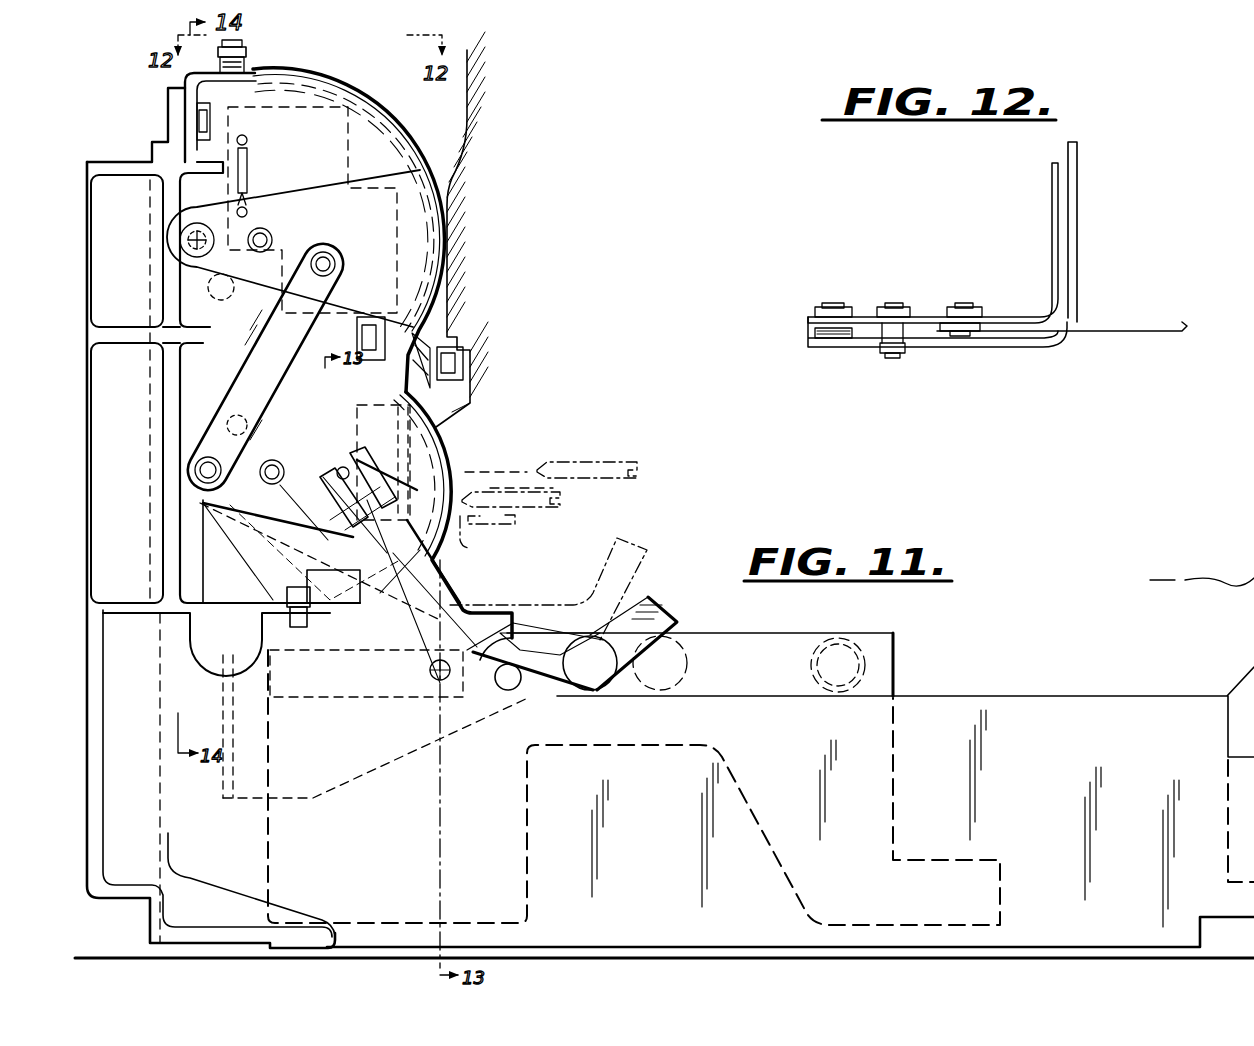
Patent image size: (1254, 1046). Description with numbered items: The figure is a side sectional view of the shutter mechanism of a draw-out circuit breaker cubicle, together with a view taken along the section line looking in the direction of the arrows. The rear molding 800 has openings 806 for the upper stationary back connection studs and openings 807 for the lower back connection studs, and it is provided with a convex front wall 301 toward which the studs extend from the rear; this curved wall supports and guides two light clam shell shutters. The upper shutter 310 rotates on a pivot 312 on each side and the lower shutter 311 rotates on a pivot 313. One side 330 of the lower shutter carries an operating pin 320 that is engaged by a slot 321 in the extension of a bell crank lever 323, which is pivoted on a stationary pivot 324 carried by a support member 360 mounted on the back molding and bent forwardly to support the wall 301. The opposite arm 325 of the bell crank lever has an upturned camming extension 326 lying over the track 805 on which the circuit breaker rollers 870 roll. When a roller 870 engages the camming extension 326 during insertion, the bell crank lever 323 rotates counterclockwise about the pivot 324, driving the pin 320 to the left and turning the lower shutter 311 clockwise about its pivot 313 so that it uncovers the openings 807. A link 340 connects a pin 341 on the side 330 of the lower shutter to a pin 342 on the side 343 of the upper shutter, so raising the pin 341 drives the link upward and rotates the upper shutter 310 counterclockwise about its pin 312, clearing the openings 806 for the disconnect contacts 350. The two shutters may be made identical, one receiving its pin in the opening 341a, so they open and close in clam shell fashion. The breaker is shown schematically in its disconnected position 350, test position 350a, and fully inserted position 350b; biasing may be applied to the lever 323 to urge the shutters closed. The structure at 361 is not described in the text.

In FIG. 11, the rear molding 800 is at (155, 130).
In FIG. 11, the convex front wall 301 is at (430, 147).
In FIG. 11, the openings for upper stationary back connection studs 806 is at (443, 227).
In FIG. 11, the clam shell shutter 310 is at (446, 264).
In FIG. 11, the clam shell shutter 311 is at (455, 432).
In FIG. 11, the openings for lower back connection studs 807 is at (462, 412).
In FIG. 11, the side of shutter 330 is at (363, 408).
In FIG. 11, the side of shutter 343 is at (335, 190).
In FIG. 12, the side of shutter 343 is at (1035, 287).
In FIG. 11, the pivot 312 is at (265, 226).
In FIG. 12, the pivot 312 is at (893, 360).
In FIG. 11, the opening 341a is at (222, 293).
In FIG. 12, the opening 341a is at (832, 305).
In FIG. 11, the link 340 is at (245, 378).
In FIG. 11, the pin 342 is at (331, 256).
In FIG. 12, the pin 342 is at (962, 305).
In FIG. 11, the pin 341 is at (195, 472).
In FIG. 11, the pivot 313 is at (274, 458).
In FIG. 11, the operating pin 320 is at (340, 462).
In FIG. 11, the slot 321 is at (380, 487).
In FIG. 11, the stationary pivot 324 is at (435, 670).
In FIG. 11, the bell crank lever 323 is at (372, 598).
In FIG. 12, the bell crank lever 323 is at (1092, 320).
In FIG. 11, the opposite arm of bell crank lever 325 is at (550, 698).
In FIG. 11, the camming extension 326 is at (640, 604).
In FIG. 11, the circuit breaker roller 870 is at (718, 628).
In FIG. 11, the track 805 is at (958, 697).
In FIG. 11, the circuit breaker disconnect contacts 350 is at (588, 458).
In FIG. 11, the test position 350a is at (515, 505).
In FIG. 11, the fully inserted position 350b is at (468, 542).
In FIG. 12, the support member 360 is at (1078, 262).
In FIG. 12, the lower plate 361 is at (1005, 352).